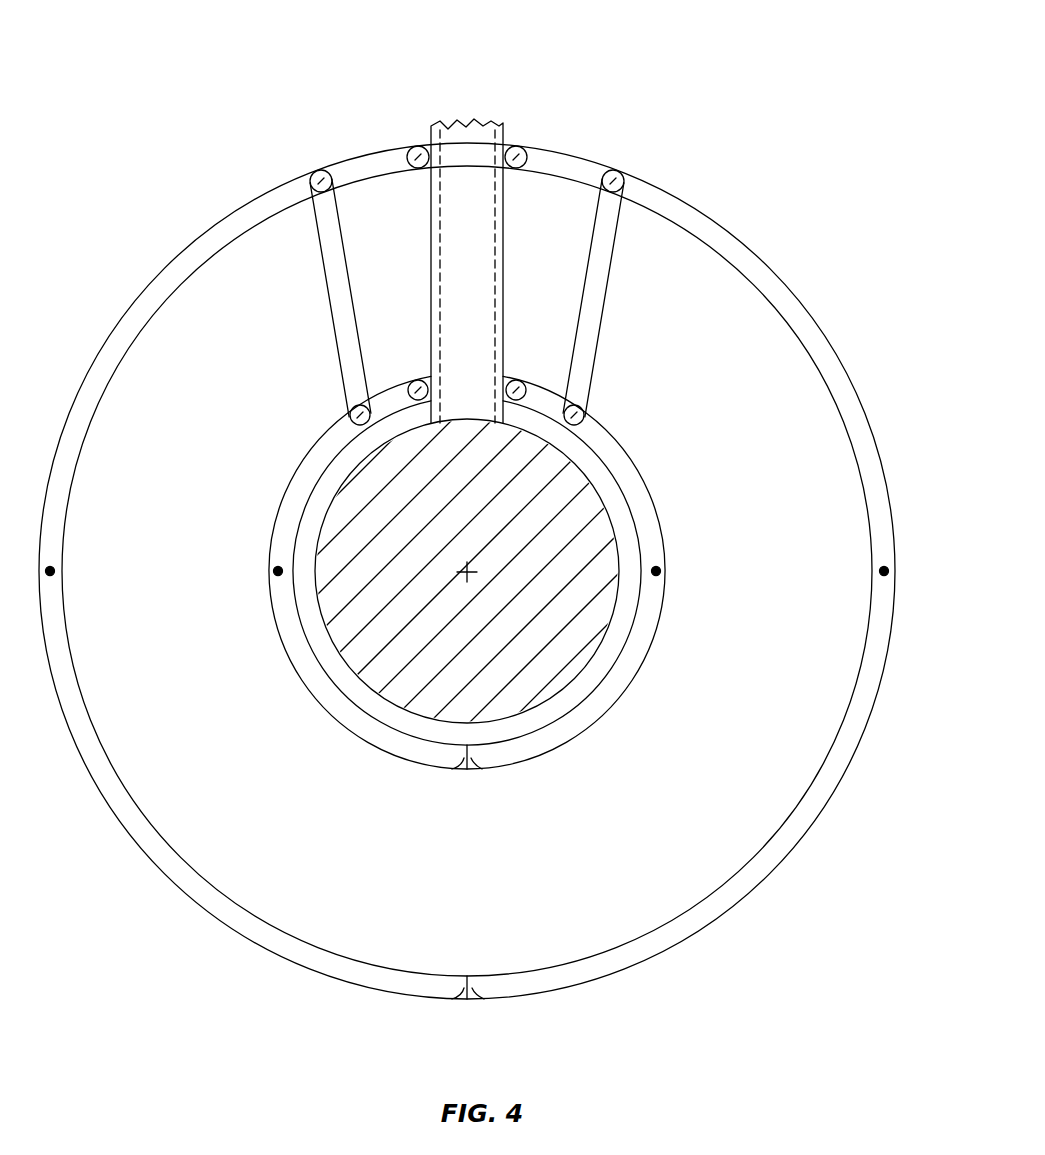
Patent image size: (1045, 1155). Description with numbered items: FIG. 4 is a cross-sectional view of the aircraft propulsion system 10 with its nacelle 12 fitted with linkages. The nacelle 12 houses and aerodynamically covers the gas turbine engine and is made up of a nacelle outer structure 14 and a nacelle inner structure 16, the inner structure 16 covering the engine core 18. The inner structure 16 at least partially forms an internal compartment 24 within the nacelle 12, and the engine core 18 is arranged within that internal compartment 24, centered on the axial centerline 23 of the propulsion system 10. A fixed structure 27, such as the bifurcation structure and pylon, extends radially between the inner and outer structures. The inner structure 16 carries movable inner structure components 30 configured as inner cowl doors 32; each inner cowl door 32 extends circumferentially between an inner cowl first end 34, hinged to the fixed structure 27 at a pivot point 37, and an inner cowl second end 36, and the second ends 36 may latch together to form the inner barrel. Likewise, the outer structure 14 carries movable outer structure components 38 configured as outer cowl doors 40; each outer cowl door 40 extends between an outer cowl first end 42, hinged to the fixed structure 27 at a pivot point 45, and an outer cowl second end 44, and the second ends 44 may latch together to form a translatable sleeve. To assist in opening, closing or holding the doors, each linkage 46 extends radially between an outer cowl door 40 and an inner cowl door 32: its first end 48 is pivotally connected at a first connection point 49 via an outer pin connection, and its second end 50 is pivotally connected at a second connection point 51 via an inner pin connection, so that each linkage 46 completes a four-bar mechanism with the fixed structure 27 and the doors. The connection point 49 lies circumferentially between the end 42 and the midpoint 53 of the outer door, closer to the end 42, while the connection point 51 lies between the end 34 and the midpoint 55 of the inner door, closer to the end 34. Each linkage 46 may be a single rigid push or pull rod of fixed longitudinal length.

The aircraft propulsion system 10 is at (727, 86).
The nacelle 12 is at (490, 550).
The nacelle outer structure 14 is at (490, 571).
The nacelle inner structure 16 is at (467, 572).
The engine core 18 is at (625, 527).
The axial centerline 23 is at (470, 578).
The internal compartment 24 is at (450, 571).
The fixed structure 27 is at (464, 114).
The inner structure component 30 is at (467, 572).
The inner cowl door 32 is at (520, 572).
The inner cowl first end 34 is at (467, 400).
The inner cowl second end 36 is at (458, 770).
The pivot point 37 is at (417, 401).
The outer structure component 38 is at (490, 571).
The outer cowl door 40 is at (832, 330).
The outer cowl first end 42 is at (469, 153).
The outer cowl second end 44 is at (462, 990).
The pivot point 45 is at (412, 168).
The linkage 46 is at (322, 300).
The linkage first end 48 is at (322, 170).
The first connection point 49 is at (466, 140).
The linkage second end 50 is at (350, 410).
The second connection point 51 is at (469, 403).
The circumferential midpoint 53 is at (57, 571).
The circumferential midpoint 55 is at (272, 570).